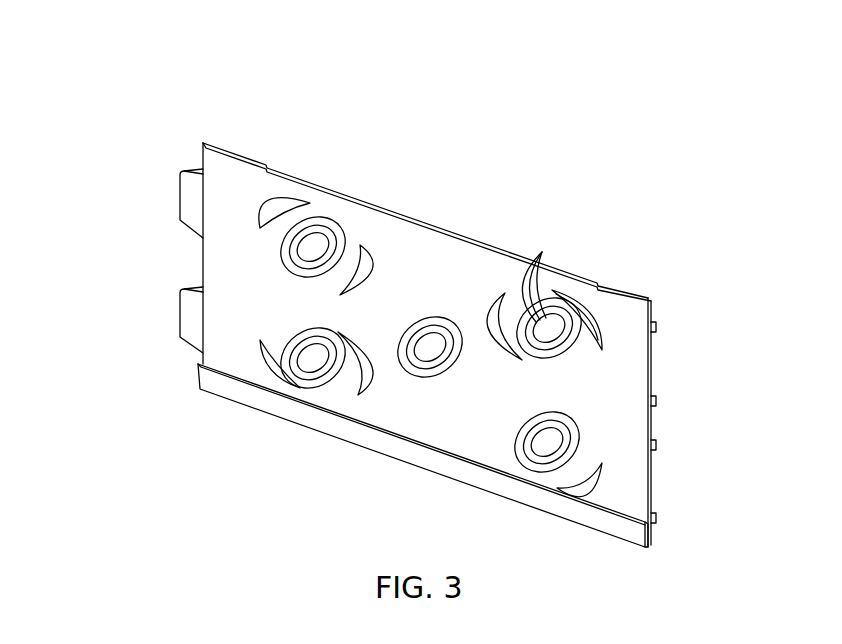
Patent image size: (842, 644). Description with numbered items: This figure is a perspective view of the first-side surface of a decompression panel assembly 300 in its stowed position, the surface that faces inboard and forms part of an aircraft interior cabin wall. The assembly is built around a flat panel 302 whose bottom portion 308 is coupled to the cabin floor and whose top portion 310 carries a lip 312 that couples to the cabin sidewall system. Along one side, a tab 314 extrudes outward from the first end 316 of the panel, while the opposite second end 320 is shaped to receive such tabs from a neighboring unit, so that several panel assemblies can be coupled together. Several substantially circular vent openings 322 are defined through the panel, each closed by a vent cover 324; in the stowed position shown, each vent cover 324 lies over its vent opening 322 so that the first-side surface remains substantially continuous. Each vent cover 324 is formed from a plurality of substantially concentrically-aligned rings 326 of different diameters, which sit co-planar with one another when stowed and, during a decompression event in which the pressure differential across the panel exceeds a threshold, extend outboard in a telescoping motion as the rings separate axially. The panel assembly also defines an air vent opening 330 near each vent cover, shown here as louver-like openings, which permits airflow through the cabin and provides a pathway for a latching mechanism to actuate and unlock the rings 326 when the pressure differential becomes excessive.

The decompression panel assembly 300 is at (200, 94).
The panel 302 is at (617, 307).
The bottom portion 308 is at (279, 418).
The top portion 310 is at (228, 148).
The lip 312 is at (310, 184).
The tab 314 is at (192, 312).
The first end 316 is at (149, 232).
The second end 320 is at (661, 376).
The vent opening 322 is at (323, 220).
The vent cover 324 is at (329, 246).
The concentrically-aligned rings 326 is at (539, 253).
The air vent opening 330 is at (578, 308).